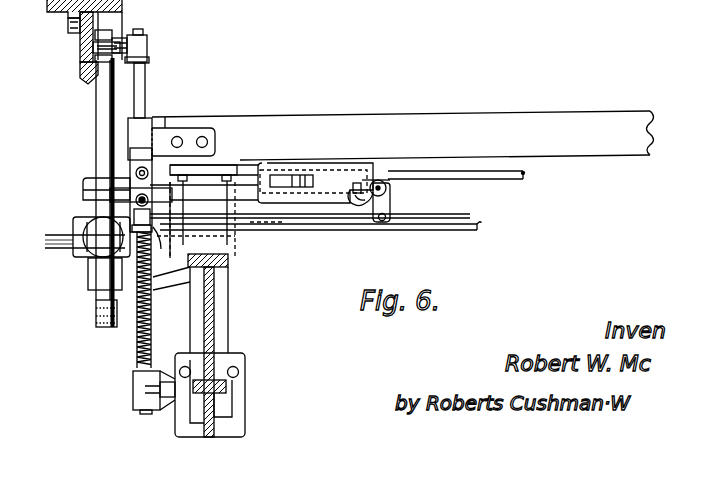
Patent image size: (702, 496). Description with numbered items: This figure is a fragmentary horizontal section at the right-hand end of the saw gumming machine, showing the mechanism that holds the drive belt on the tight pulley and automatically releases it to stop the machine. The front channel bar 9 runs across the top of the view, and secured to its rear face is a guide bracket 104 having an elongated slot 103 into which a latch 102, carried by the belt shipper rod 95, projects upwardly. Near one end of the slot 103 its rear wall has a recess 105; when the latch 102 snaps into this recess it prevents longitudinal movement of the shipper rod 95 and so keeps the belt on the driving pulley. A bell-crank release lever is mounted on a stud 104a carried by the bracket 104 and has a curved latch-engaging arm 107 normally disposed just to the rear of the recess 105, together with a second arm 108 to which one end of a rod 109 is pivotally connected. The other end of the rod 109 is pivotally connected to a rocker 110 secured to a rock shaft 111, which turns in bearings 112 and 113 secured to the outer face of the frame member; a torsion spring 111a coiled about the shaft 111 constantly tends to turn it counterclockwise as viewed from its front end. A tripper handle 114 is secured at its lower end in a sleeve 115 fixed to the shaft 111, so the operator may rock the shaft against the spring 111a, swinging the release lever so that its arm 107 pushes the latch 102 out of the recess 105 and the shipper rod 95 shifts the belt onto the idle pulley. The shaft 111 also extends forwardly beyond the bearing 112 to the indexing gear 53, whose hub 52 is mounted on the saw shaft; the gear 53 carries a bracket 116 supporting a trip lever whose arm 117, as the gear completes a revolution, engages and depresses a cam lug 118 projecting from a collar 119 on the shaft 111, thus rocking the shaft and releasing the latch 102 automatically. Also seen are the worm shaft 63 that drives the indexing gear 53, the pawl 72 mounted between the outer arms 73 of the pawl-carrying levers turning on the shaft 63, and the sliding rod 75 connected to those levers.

The channel bar 9 is at (482, 116).
The hub 52 is at (59, 16).
The indexing gear 53 is at (86, 72).
The shaft 63 is at (99, 118).
The pawl 72 is at (103, 235).
The outer arms 73 is at (77, 224).
The rod 75 is at (314, 232).
The shipper rod 95 is at (527, 176).
The latch 102 is at (283, 182).
The elongated slot 103 is at (313, 180).
The guide bracket 104 is at (353, 163).
The stud 104a is at (388, 190).
The recess 105 is at (360, 182).
The latch-engaging arm 107 is at (357, 205).
The second arm 108 is at (390, 200).
The rod 109 is at (257, 220).
The rocker 110 is at (150, 215).
The rock shaft 111 is at (144, 92).
The torsion spring 111a is at (138, 354).
The bearing 112 is at (152, 126).
The bearing 113 is at (140, 398).
The tripper handle 114 is at (83, 196).
The sleeve 115 is at (132, 170).
The bracket 116 is at (105, 39).
The arm 117 is at (128, 52).
The cam lug 118 is at (129, 38).
The collar 119 is at (148, 58).